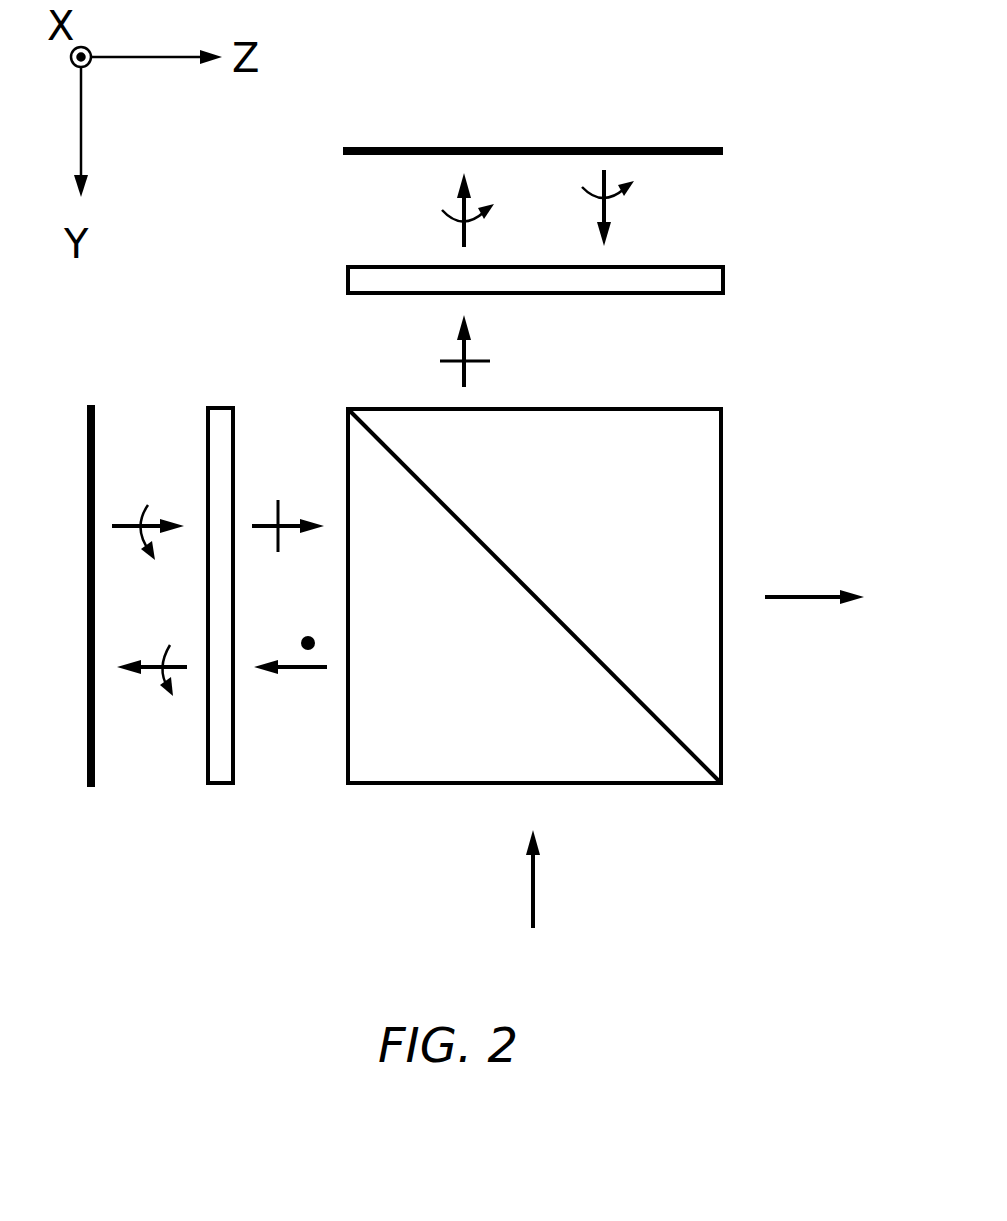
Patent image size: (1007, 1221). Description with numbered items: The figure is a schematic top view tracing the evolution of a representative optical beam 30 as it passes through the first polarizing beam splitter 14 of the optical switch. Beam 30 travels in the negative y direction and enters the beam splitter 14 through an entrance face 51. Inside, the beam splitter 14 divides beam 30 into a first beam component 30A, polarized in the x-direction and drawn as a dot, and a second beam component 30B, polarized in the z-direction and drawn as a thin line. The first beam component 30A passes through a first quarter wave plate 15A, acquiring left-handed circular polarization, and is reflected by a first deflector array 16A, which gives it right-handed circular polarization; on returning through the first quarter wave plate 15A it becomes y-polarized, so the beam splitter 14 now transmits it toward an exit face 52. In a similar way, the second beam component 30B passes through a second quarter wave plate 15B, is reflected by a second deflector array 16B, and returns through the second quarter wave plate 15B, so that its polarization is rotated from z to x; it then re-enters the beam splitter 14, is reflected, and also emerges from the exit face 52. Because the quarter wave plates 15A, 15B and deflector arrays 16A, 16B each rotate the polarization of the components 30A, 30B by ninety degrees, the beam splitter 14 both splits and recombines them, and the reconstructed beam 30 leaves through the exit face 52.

The first polarizing beam splitter 14 is at (656, 760).
The first quarter wave plate 15A is at (220, 785).
The second quarter wave plate 15B is at (723, 280).
The first deflector array 16A is at (87, 753).
The second deflector array 16B is at (680, 149).
The optical beam 30 is at (797, 597).
The first beam component 30A is at (288, 670).
The second beam component 30B is at (460, 373).
The entrance face 51 is at (427, 783).
The exit face 52 is at (722, 688).